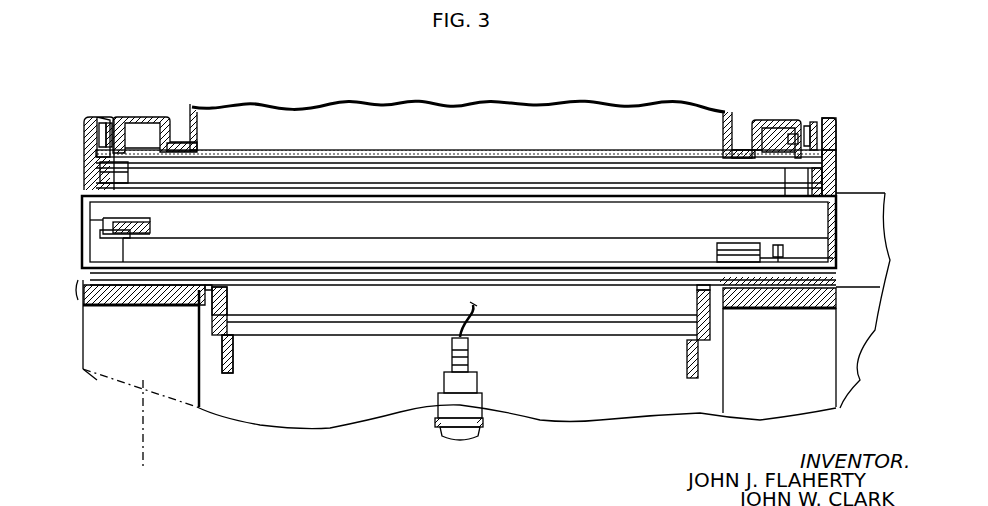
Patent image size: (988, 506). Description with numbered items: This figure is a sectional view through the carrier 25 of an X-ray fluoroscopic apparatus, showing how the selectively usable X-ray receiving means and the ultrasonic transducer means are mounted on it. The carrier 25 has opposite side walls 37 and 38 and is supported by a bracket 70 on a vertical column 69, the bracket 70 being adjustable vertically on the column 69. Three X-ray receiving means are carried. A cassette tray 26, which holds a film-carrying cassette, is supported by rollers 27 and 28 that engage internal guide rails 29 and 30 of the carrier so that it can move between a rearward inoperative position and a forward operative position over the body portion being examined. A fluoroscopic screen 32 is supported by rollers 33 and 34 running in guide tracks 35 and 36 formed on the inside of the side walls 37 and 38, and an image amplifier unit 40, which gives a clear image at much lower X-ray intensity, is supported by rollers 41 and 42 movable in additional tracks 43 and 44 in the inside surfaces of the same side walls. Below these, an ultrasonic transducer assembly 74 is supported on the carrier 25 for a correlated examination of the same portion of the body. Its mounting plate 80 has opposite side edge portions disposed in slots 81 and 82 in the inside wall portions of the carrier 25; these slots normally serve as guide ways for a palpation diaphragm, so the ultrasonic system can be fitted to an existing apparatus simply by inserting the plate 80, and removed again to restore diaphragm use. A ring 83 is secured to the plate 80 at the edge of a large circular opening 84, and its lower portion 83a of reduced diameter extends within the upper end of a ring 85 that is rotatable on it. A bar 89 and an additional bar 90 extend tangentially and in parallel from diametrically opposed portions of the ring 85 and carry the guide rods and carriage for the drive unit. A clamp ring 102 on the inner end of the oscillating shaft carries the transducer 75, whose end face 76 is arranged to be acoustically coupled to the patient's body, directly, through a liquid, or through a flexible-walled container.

The carrier 25 is at (98, 330).
The cassette tray 26 is at (634, 250).
The roller 27 is at (105, 220).
The roller 28 is at (737, 262).
The internal guide rail 29 is at (113, 237).
The internal guide rail 30 is at (768, 252).
The fluoroscopic screen 32 is at (458, 175).
The roller 33 is at (140, 165).
The roller 34 is at (829, 160).
The guide track 35 is at (150, 175).
The guide track 36 is at (824, 180).
The side wall 37 is at (98, 110).
The side wall 38 is at (829, 138).
The image amplifier unit 40 is at (737, 120).
The roller 41 is at (118, 120).
The roller 42 is at (815, 133).
The track 43 is at (106, 124).
The track 44 is at (822, 130).
The vertical column 69 is at (577, 402).
The bracket 70 is at (145, 441).
The ultrasonic transducer assembly 74 is at (715, 334).
The transducer 75 is at (436, 407).
The end face 76 is at (458, 437).
The mounting plate 80 is at (227, 290).
The slot 81 is at (190, 300).
The slot 82 is at (757, 294).
The ring 83 is at (238, 322).
The lower portion of reduced diameter 83a is at (207, 327).
The circular opening 84 is at (243, 313).
The ring 85 is at (633, 340).
The bar 89 is at (686, 358).
The bar 90 is at (233, 360).
The clamp ring 102 is at (483, 423).